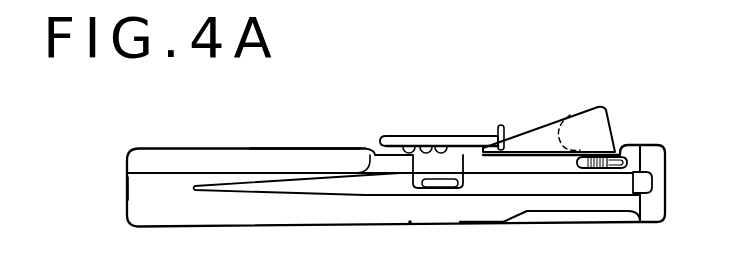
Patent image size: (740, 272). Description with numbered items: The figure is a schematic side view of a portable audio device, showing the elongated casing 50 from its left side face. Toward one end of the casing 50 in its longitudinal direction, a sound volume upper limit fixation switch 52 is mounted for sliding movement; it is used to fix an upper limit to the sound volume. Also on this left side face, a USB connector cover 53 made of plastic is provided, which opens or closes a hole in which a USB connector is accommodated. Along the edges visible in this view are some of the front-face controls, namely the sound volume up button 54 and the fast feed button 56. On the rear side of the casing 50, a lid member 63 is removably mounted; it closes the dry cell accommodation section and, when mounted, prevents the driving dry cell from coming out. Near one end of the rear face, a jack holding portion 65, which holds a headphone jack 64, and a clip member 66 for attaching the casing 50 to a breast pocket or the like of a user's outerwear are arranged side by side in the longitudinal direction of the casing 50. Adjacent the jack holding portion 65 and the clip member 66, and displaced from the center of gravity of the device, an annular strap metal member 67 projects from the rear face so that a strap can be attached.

The casing 50 is at (185, 228).
The sound volume upper limit fixation switch 52 is at (587, 157).
The USB connector cover 53 is at (422, 165).
The sound volume up button 54 is at (410, 223).
The fast feed button 56 is at (473, 223).
The lid member 63 is at (203, 157).
The headphone jack 64 is at (580, 150).
The jack holding portion 65 is at (527, 127).
The clip member 66 is at (410, 136).
The annular strap metal member 67 is at (496, 127).